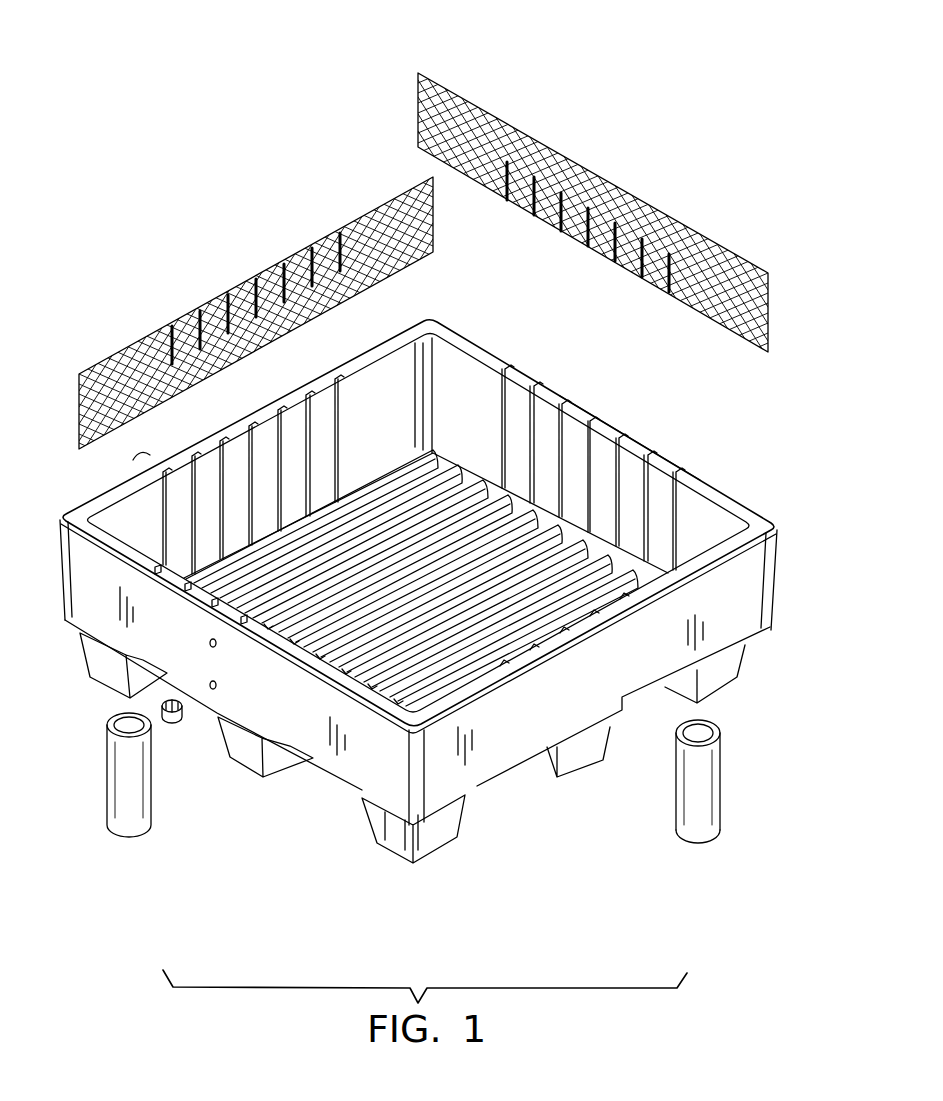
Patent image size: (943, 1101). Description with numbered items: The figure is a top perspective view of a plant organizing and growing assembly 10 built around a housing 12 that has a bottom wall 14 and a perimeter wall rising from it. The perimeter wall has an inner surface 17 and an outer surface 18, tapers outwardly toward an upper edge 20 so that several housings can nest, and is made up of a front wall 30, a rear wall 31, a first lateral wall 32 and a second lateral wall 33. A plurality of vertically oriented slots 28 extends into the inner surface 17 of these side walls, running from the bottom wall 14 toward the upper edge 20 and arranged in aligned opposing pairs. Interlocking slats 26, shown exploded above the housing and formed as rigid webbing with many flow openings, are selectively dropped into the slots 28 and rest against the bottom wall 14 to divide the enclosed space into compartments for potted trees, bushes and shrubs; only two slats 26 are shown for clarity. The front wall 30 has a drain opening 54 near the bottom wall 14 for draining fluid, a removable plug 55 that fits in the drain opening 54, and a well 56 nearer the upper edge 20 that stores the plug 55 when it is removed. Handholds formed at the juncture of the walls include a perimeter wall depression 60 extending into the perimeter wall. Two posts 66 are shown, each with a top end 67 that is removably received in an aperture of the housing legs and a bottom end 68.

The plant organizing and growing assembly 10 is at (755, 215).
The housing 12 is at (773, 636).
The bottom wall 14 is at (334, 785).
The inner surface 17 is at (713, 536).
The outer surface 18 is at (742, 595).
The upper edge 20 is at (477, 352).
The interlocking slats 26 is at (420, 72).
The slots 28 is at (337, 405).
The front wall 30 is at (267, 713).
The rear wall 31 is at (657, 457).
The first lateral wall 32 is at (493, 753).
The second lateral wall 33 is at (147, 453).
The drain opening 54 is at (209, 684).
The plug 55 is at (180, 718).
The well 56 is at (209, 642).
The perimeter wall depression 60 is at (637, 703).
The posts 66 is at (722, 783).
The top end 67 is at (108, 800).
The bottom end 68 is at (697, 843).